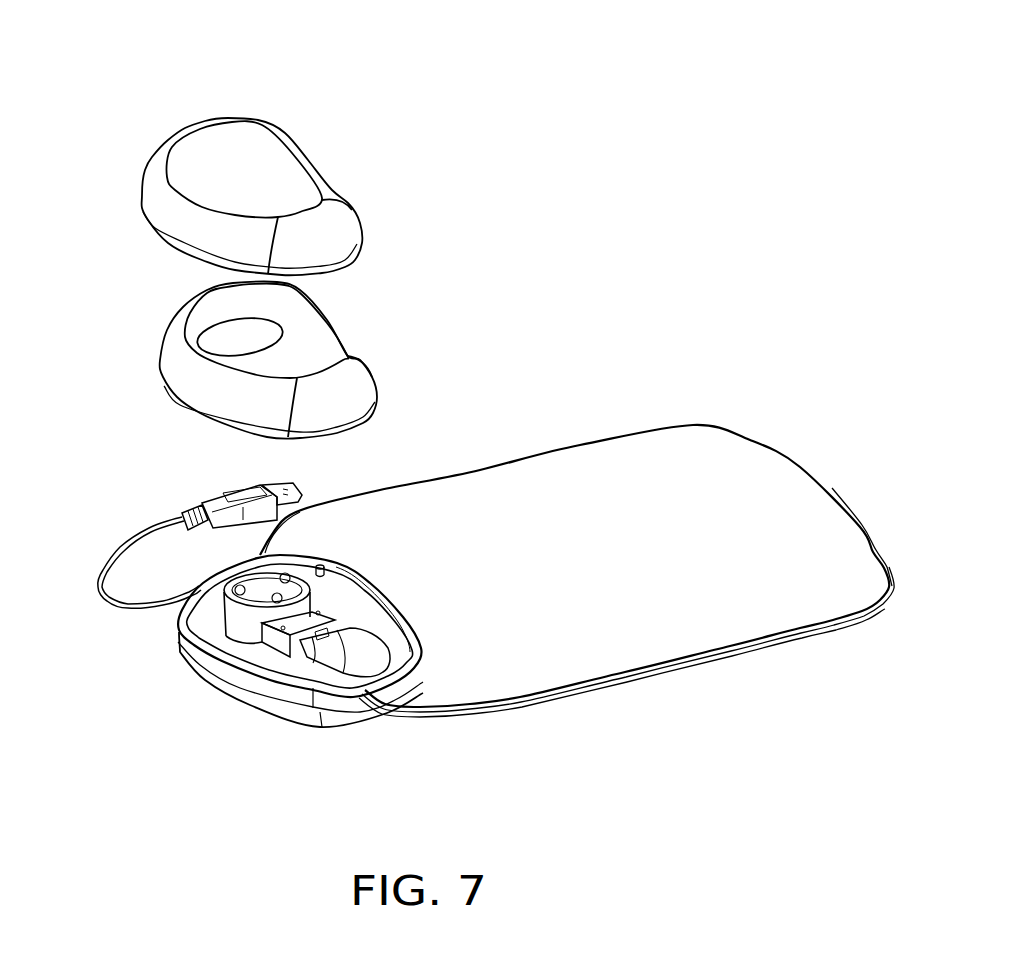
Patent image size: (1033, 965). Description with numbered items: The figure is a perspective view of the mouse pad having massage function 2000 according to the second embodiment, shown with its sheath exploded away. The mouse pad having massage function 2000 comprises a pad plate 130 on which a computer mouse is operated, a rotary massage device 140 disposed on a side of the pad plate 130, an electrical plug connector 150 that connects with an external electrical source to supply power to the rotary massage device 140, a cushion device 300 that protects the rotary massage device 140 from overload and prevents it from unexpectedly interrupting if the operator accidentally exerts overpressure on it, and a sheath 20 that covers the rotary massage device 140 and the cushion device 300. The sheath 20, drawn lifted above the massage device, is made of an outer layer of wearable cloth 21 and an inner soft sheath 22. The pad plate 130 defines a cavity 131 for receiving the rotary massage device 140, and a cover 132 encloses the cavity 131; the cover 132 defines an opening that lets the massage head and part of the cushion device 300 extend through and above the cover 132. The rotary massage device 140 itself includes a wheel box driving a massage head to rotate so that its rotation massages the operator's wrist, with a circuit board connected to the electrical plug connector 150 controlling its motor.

The mouse pad having massage function 2000 is at (134, 45).
The sheath 20 is at (63, 235).
The outer layer of wearable cloth 21 is at (212, 235).
The inner soft sheath 22 is at (212, 385).
The pad plate 130 is at (575, 497).
The cavity 131 is at (217, 673).
The cover 132 is at (208, 633).
The rotary massage device 140 is at (283, 628).
The electrical plug connector 150 is at (150, 533).
The cushion device 300 is at (233, 612).